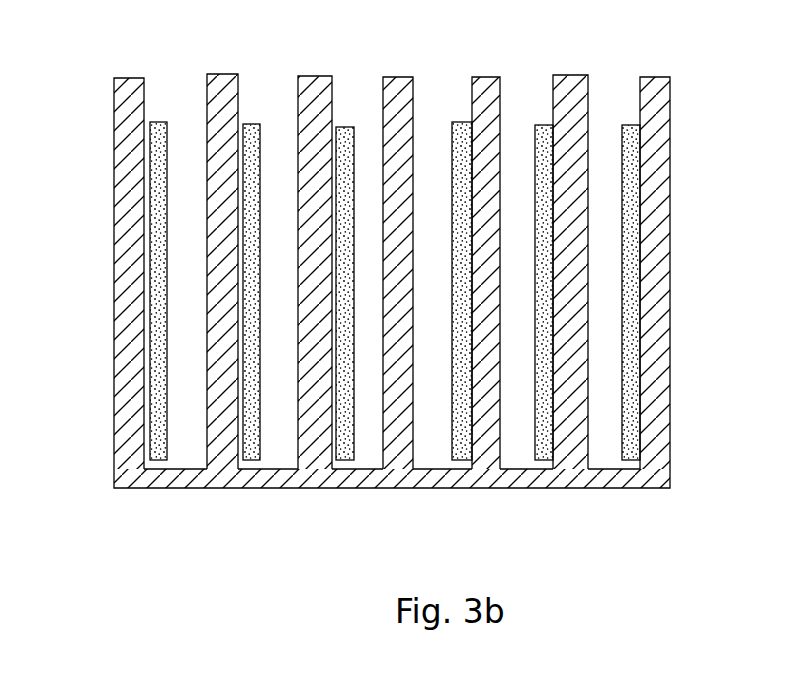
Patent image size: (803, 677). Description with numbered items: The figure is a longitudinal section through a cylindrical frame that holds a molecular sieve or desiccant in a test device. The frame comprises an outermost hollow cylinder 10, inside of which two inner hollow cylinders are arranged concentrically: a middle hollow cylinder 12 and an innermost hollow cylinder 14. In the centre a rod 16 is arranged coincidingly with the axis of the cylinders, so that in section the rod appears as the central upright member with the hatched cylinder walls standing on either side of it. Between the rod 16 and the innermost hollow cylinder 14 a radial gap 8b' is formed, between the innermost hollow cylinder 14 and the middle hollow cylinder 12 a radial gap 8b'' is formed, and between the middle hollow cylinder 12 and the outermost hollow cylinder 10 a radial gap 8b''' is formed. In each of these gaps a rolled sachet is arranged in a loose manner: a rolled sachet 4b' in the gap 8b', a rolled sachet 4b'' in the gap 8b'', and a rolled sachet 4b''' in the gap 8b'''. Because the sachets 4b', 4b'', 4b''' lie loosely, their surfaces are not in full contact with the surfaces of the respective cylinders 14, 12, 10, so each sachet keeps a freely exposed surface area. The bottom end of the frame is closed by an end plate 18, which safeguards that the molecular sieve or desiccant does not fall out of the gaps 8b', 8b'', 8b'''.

The outermost hollow cylinder 10 is at (126, 78).
The middle hollow cylinder 12 is at (227, 76).
The innermost hollow cylinder 14 is at (318, 76).
The rod 16 is at (398, 77).
The end plate 18 is at (175, 478).
The rolled sachet 4b''' is at (405, 283).
The rolled sachet 4b'' is at (397, 292).
The rolled sachet 4b' is at (392, 291).
The radial gap 8b''' is at (398, 157).
The radial gap 8b'' is at (394, 242).
The radial gap 8b' is at (390, 330).